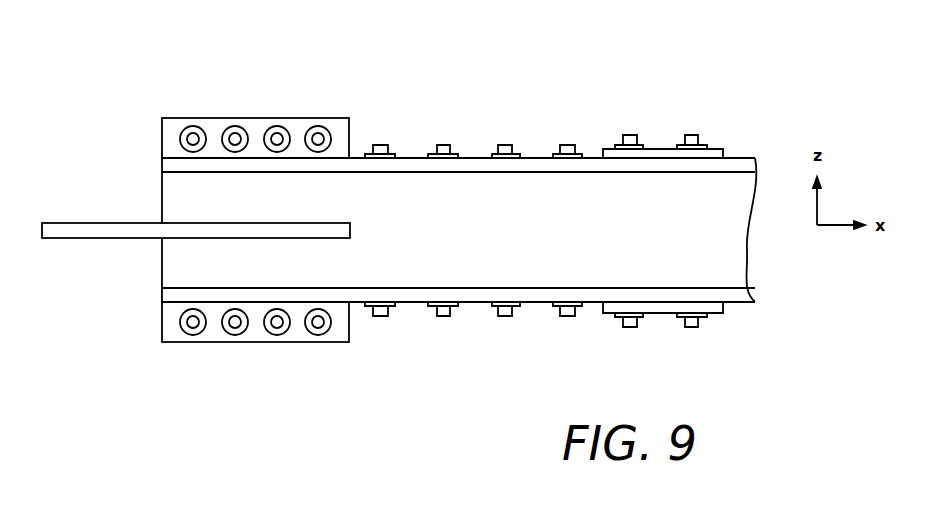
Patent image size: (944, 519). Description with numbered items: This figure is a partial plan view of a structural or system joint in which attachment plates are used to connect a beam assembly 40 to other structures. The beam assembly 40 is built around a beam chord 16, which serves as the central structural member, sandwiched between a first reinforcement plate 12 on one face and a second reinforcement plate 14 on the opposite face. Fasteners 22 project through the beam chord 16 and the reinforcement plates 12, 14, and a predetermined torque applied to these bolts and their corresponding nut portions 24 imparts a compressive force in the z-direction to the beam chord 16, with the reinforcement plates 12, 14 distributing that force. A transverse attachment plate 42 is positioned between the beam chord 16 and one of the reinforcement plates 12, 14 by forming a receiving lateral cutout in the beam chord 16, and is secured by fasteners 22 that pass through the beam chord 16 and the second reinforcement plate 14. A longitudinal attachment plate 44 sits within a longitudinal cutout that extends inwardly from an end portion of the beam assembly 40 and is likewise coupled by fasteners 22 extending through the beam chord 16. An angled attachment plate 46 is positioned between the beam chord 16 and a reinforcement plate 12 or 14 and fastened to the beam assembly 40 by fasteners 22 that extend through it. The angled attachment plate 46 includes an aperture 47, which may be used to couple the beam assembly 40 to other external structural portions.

The beam assembly 40 is at (708, 82).
The beam chord 16 is at (642, 225).
The second reinforcement plate 14 is at (590, 158).
The first reinforcement plate 12 is at (528, 303).
The angled attachment plate 46 is at (258, 118).
The aperture 47 is at (318, 139).
The longitudinal attachment plate 44 is at (87, 223).
The fasteners 22 is at (443, 145).
The nut portions 24 is at (443, 316).
The transverse attachment plate 42 is at (723, 152).